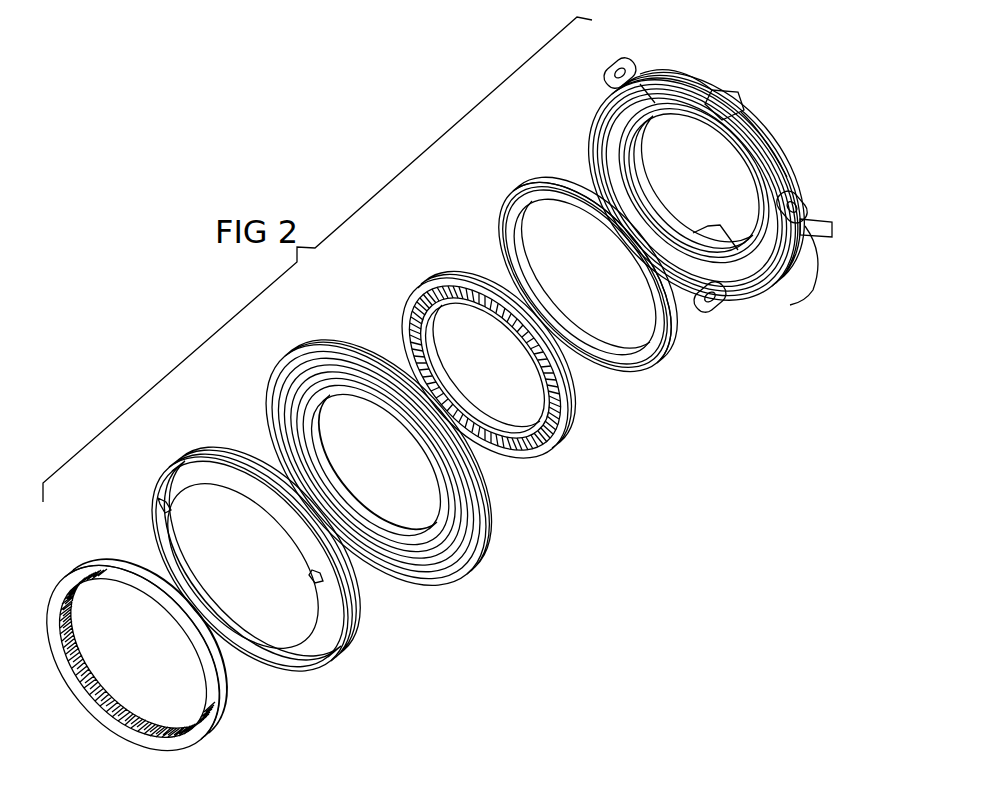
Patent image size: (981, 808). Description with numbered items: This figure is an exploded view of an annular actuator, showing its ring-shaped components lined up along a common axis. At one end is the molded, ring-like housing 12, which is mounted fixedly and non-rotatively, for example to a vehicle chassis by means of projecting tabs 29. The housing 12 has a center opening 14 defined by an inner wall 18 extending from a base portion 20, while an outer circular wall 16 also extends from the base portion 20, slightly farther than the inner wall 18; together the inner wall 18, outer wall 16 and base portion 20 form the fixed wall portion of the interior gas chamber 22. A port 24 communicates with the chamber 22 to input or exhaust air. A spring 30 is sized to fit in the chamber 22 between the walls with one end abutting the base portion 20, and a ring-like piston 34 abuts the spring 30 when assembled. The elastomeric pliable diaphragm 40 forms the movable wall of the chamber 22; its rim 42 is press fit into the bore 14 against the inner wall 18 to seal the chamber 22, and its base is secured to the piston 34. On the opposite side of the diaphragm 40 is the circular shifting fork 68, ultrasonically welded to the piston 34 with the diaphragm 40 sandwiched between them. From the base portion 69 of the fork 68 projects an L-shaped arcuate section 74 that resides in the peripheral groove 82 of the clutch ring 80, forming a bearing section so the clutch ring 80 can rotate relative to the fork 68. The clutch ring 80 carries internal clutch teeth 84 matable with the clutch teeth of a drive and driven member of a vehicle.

The housing 12 is at (686, 196).
The center opening 14 is at (717, 200).
The outer circular wall 16 is at (767, 152).
The inner wall 18 is at (645, 198).
The base portion 20 is at (668, 100).
The gas chamber 22 is at (620, 120).
The port 24 is at (822, 240).
The projecting tabs 29 is at (603, 81).
The spring 30 is at (662, 356).
The piston 34 is at (560, 432).
The diaphragm 40 is at (394, 465).
The rim 42 is at (338, 478).
The shifting fork 68 is at (266, 564).
The base portion 69 is at (217, 477).
The L-shaped arcuate section 74 is at (208, 620).
The clutch ring 80 is at (149, 652).
The groove 82 is at (98, 568).
The internal clutch teeth 84 is at (158, 627).